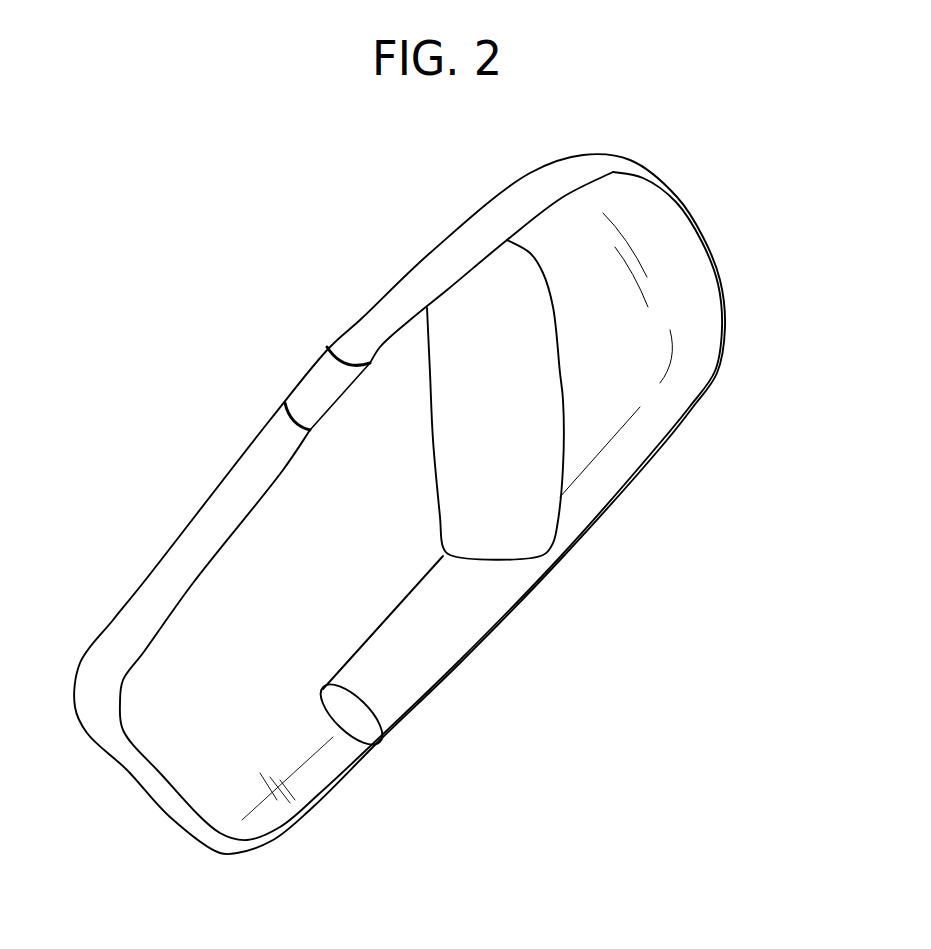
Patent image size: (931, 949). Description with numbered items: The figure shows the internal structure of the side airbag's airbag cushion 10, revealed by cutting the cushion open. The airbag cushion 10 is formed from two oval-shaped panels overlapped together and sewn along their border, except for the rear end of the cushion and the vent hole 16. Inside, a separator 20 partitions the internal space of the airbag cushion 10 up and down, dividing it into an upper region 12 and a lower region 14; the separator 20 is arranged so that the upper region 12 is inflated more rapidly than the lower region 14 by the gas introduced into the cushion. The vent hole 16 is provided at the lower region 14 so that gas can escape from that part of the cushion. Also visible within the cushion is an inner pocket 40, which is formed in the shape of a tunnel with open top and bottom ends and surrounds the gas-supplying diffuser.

The airbag cushion 10 is at (355, 266).
The upper region 12 is at (613, 330).
The lower region 14 is at (260, 632).
The vent hole 16 is at (320, 383).
The separator 20 is at (528, 430).
The inner pocket 40 is at (423, 640).